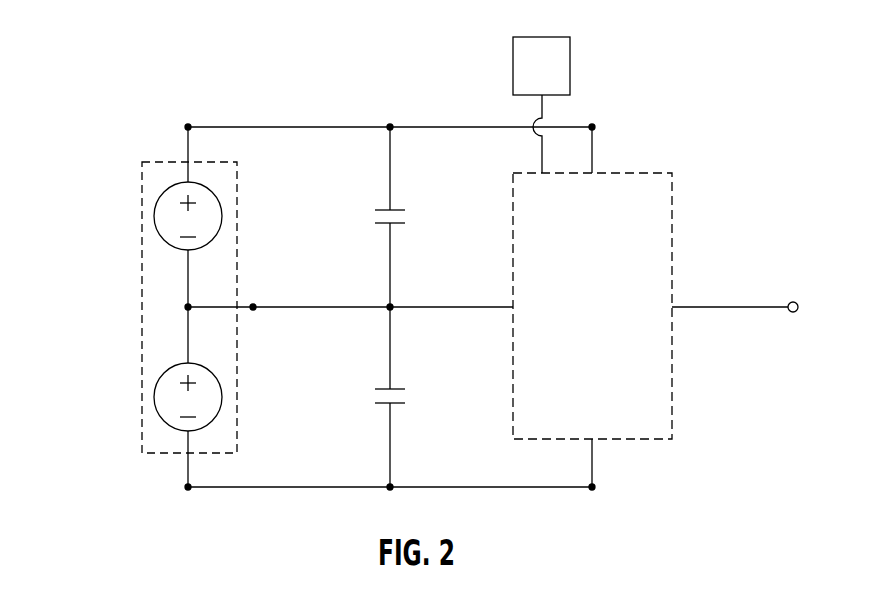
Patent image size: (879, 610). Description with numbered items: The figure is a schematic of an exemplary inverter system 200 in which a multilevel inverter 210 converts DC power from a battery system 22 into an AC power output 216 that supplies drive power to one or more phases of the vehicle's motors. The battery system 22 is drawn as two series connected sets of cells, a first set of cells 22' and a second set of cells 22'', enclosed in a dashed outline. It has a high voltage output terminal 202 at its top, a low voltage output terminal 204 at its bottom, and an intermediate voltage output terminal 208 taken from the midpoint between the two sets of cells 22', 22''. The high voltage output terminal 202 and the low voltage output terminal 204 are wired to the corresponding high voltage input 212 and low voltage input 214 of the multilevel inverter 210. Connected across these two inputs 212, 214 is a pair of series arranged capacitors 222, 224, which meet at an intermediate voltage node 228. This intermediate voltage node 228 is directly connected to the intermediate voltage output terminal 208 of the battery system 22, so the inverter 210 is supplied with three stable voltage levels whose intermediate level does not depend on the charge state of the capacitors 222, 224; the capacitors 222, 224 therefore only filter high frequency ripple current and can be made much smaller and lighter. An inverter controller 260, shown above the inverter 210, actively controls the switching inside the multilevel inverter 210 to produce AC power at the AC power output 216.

The inverter system 200 is at (97, 52).
The battery system 22 is at (155, 307).
The first set of cells 22' is at (150, 206).
The second set of cells 22'' is at (147, 388).
The high voltage output terminal 202 is at (187, 125).
The low voltage output terminal 204 is at (187, 489).
The intermediate voltage output terminal 208 is at (255, 305).
The multilevel inverter 210 is at (655, 172).
The high voltage input 212 is at (595, 126).
The low voltage input 214 is at (595, 489).
The AC power output 216 is at (796, 301).
The first capacitor 222 is at (384, 209).
The second capacitor 224 is at (385, 405).
The intermediate voltage node 228 is at (393, 304).
The inverter controller 260 is at (540, 36).